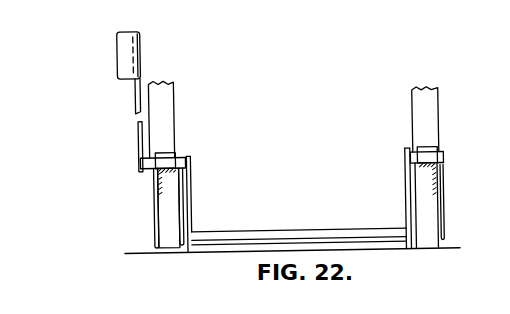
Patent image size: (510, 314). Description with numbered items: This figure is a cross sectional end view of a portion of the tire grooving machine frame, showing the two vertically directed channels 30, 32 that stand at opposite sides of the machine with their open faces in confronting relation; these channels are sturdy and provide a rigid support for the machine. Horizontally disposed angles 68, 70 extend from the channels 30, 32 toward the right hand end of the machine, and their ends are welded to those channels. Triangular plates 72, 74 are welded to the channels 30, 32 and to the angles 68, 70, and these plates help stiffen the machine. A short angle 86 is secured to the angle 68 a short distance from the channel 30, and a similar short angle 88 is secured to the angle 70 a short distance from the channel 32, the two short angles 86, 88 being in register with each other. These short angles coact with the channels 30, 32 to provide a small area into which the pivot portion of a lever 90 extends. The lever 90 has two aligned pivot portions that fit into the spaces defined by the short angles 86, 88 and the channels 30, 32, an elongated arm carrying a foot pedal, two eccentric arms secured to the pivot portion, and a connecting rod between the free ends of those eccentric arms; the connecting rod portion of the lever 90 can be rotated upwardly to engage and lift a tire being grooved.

The vertically directed channel 30 is at (177, 108).
The vertically directed channel 32 is at (414, 116).
The horizontally disposed angle 68 is at (157, 186).
The horizontally disposed angle 70 is at (440, 190).
The triangular plate 72 is at (157, 220).
The triangular plate 74 is at (445, 227).
The short angle 86 is at (177, 150).
The short angle 88 is at (432, 151).
The lever 90 is at (137, 110).